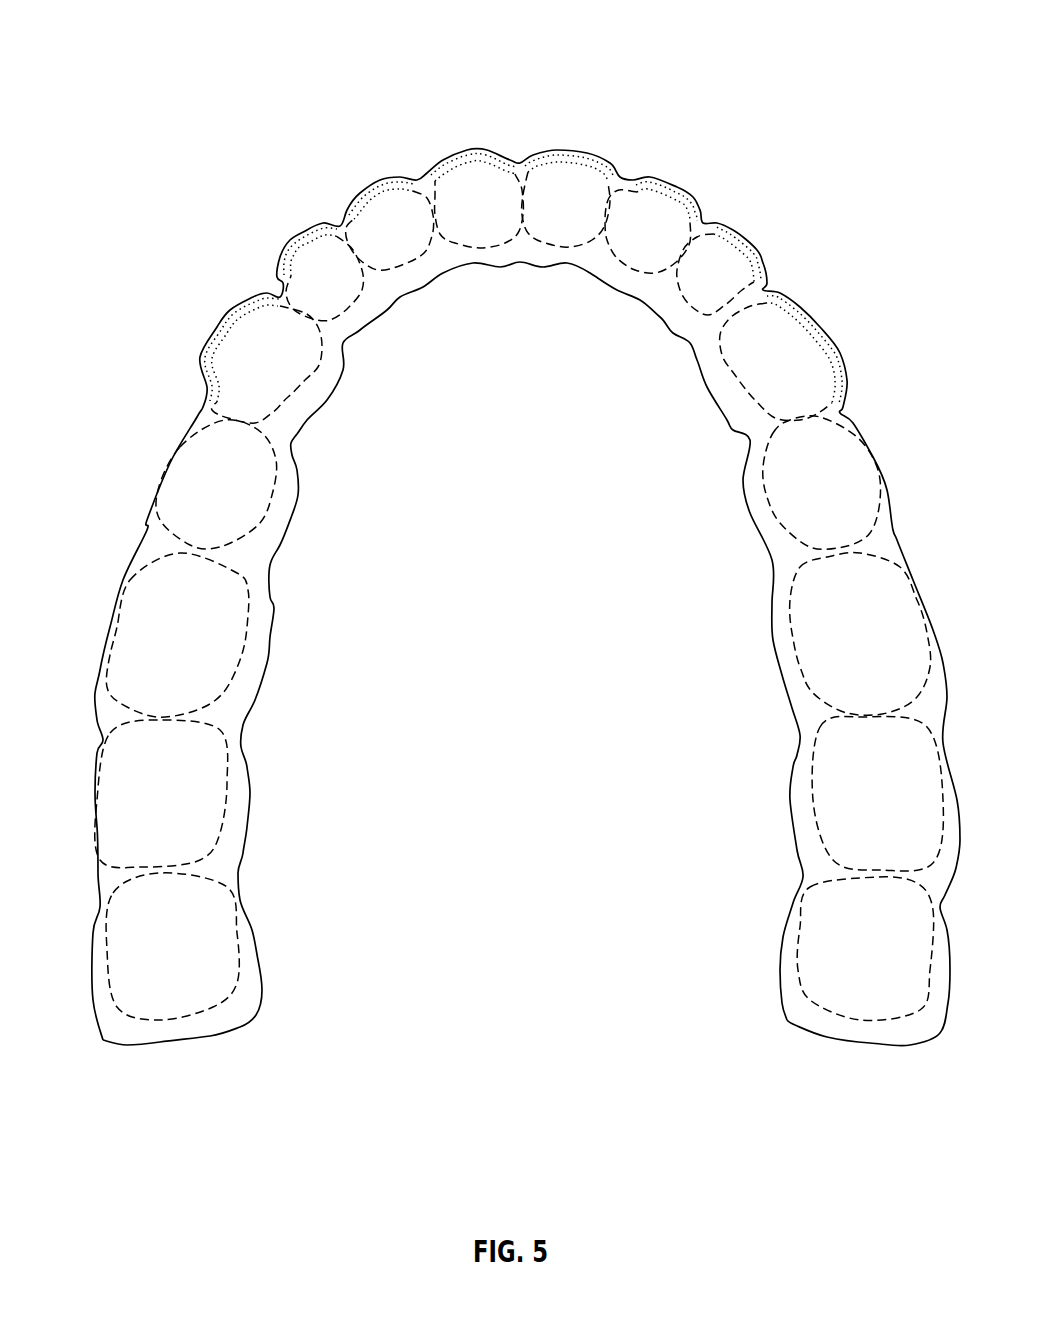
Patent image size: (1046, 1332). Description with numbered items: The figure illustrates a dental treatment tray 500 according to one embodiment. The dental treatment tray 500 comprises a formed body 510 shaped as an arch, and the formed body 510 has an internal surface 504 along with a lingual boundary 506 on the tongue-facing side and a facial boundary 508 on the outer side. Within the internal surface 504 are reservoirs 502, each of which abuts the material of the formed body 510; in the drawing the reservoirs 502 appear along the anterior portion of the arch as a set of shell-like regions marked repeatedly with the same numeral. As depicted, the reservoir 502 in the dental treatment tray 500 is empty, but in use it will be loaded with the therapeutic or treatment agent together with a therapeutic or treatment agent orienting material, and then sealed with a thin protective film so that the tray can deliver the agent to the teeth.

The dental treatment tray 500 is at (845, 66).
The reservoir 502 is at (381, 190).
The internal surface 504 is at (300, 393).
The lingual boundary 506 is at (278, 627).
The facial boundary 508 is at (147, 527).
The formed body 510 is at (737, 715).